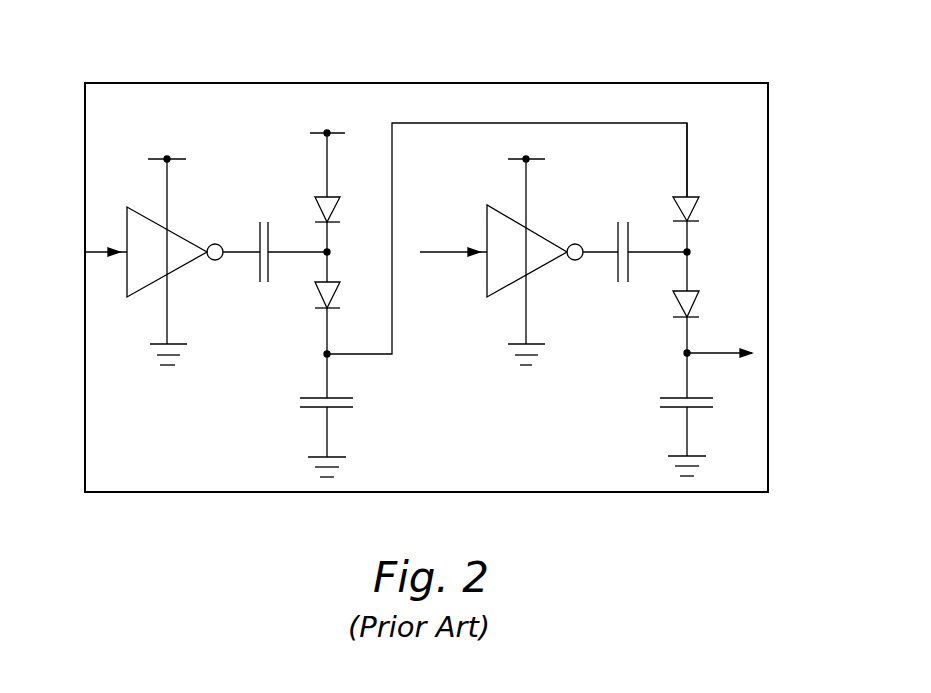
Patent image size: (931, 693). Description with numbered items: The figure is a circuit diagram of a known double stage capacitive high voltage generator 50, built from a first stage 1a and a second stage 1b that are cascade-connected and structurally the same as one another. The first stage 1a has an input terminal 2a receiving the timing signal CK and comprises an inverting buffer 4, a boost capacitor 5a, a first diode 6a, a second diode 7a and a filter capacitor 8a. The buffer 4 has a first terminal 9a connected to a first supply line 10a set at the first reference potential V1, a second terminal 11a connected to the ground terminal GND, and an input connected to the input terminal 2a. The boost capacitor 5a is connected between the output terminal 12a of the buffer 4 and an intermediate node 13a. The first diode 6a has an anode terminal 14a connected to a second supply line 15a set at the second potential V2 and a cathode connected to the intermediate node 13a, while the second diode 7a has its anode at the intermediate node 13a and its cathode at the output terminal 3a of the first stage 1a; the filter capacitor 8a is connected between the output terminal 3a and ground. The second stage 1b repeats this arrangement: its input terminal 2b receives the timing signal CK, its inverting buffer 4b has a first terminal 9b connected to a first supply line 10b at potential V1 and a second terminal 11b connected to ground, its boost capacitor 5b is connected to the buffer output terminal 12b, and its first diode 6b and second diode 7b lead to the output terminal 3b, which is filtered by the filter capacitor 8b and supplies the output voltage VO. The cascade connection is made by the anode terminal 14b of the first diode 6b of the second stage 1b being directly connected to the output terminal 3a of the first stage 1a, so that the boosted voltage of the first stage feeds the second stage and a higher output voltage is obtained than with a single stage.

The first stage 1a is at (141, 106).
The second stage 1b is at (712, 108).
The input terminal 2a is at (92, 255).
The input terminal 2b is at (452, 254).
The output terminal 3a is at (394, 350).
The output terminal 3b is at (706, 356).
The buffer 4 is at (173, 250).
The buffer 4b is at (493, 225).
The boost capacitor 5a is at (260, 250).
The boost capacitor 5b is at (616, 277).
The first diode 6a is at (333, 208).
The first diode 6b is at (694, 207).
The second diode 7a is at (335, 296).
The second diode 7b is at (678, 301).
The filter capacitor 8a is at (342, 410).
The filter capacitor 8b is at (660, 397).
The first terminal 9a is at (165, 187).
The first terminal 9b is at (527, 196).
The first supply line 10a is at (163, 158).
The first supply line 10b is at (525, 158).
The second terminal 11a is at (168, 303).
The second terminal 11b is at (527, 308).
The output terminal 12a is at (233, 254).
The output terminal 12b is at (599, 247).
The intermediate node 13a is at (325, 251).
The anode terminal 14a is at (326, 167).
The anode terminal 14b is at (687, 160).
The second supply line 15a is at (318, 133).
The high voltage generator 50 is at (618, 102).